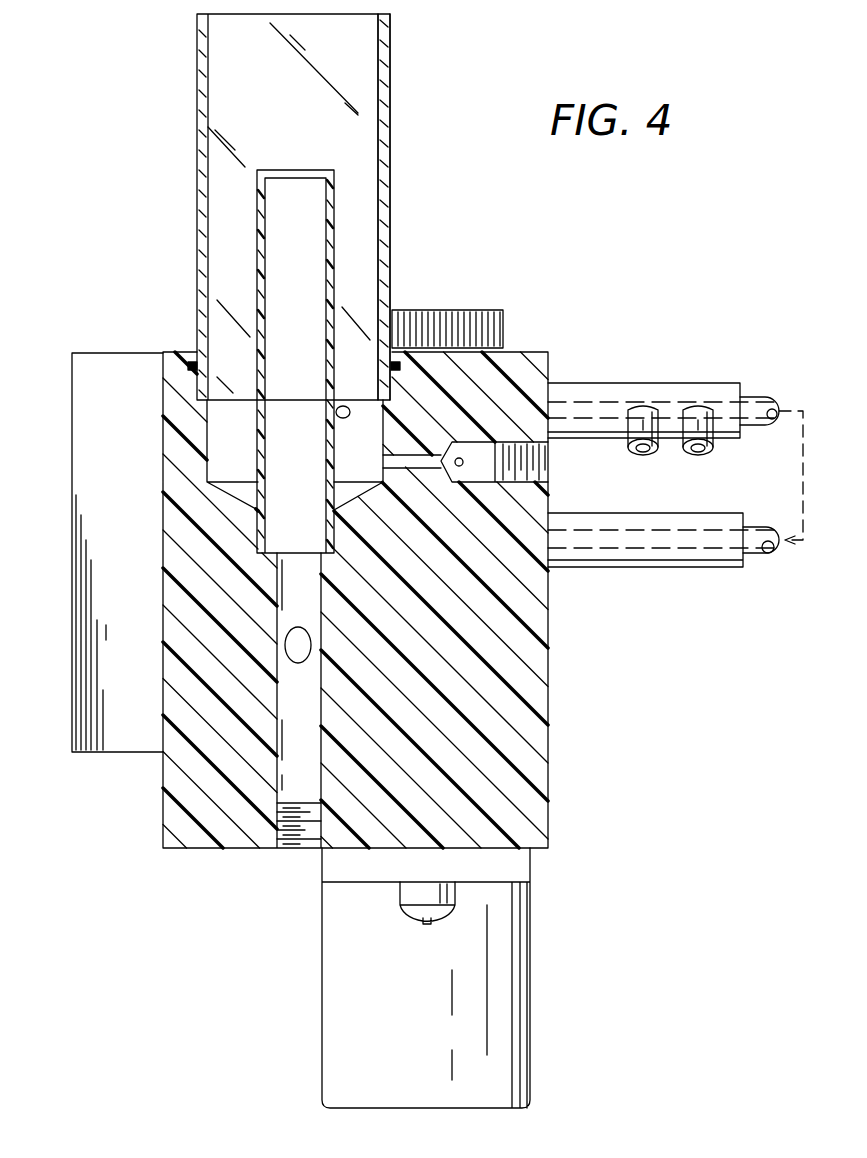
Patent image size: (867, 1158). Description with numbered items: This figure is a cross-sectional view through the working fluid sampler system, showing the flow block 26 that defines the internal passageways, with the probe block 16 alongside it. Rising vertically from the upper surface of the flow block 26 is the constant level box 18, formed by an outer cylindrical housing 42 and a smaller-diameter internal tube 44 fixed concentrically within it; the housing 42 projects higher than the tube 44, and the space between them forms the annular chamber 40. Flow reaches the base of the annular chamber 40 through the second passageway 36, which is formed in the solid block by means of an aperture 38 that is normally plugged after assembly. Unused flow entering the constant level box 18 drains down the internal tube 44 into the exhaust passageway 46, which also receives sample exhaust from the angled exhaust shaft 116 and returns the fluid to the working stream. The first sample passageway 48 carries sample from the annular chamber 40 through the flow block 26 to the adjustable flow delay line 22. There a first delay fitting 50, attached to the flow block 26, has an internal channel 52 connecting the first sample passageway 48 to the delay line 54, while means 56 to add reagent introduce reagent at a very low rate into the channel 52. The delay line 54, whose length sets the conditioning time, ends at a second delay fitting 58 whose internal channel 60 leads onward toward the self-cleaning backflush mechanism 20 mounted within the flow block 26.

The probe block 16 is at (80, 455).
The constant level box 18 is at (411, 104).
The self-cleaning backflush mechanism 20 is at (513, 950).
The adjustable flow delay line 22 is at (675, 456).
The flow block 26 is at (545, 828).
The second passageway 36 is at (400, 458).
The aperture 38 is at (532, 468).
The annular chamber 40 is at (365, 270).
The outer cylindrical housing 42 is at (390, 178).
The internal tube 44 is at (328, 246).
The exhaust passageway 46 is at (297, 847).
The first sample passageway 48 is at (347, 405).
The first delay fitting 50 is at (647, 392).
The internal channel 52 is at (568, 405).
The delay line 54 is at (758, 556).
The means to add reagent 56 is at (655, 452).
The second delay fitting 58 is at (648, 562).
The internal channel 60 is at (598, 540).
The angled exhaust shaft 116 is at (296, 663).